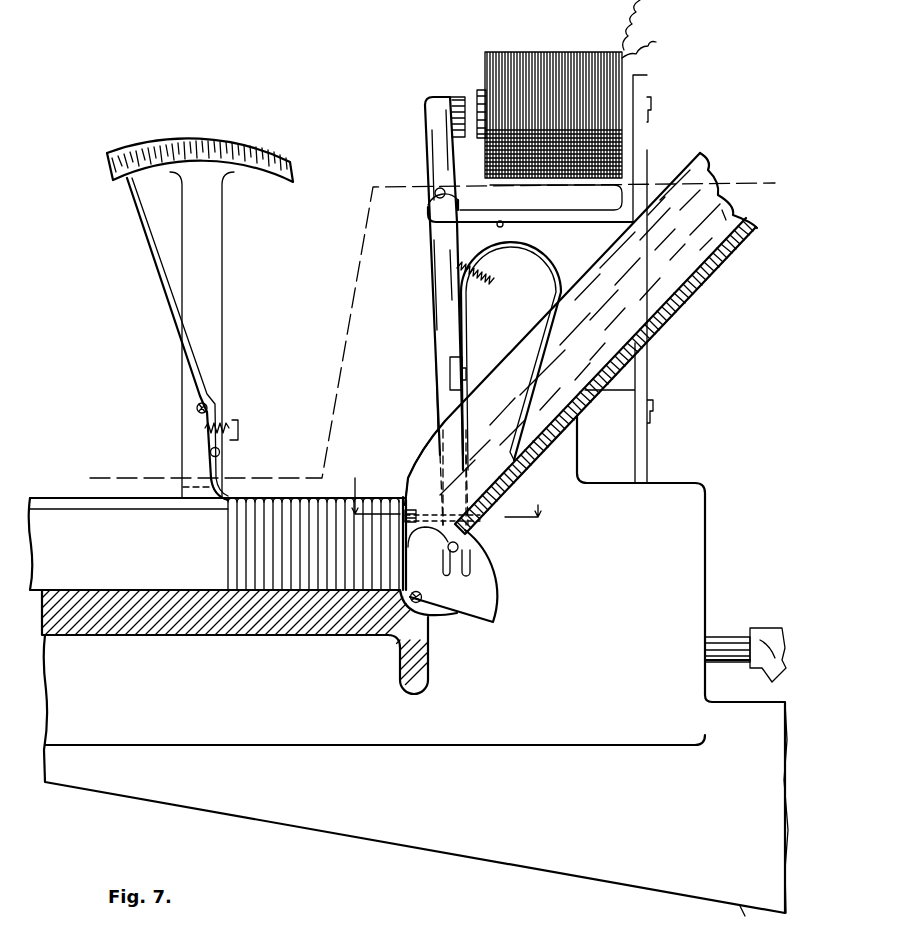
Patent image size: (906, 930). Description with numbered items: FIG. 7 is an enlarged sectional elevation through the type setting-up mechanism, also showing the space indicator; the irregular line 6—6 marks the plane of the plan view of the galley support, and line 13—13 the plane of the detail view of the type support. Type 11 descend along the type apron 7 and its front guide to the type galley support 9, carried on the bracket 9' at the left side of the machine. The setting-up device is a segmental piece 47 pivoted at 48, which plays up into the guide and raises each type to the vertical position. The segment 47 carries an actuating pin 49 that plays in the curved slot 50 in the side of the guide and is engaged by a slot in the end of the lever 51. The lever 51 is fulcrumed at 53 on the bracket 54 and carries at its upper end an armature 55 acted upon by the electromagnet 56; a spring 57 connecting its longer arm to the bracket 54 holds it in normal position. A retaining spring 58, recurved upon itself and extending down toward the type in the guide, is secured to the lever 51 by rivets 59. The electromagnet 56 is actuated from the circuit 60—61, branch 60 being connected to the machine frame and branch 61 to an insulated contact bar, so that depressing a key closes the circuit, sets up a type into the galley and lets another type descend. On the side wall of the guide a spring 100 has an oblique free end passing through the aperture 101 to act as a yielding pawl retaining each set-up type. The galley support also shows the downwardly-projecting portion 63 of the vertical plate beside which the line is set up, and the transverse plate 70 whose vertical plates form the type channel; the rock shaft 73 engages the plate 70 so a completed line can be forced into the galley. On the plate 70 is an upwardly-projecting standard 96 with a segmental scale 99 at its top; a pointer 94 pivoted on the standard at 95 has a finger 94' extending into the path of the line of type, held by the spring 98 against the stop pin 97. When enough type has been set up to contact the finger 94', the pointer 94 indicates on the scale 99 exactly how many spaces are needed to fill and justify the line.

The type apron 7 is at (710, 283).
The type galley support 9 is at (399, 664).
The bracket 9' is at (731, 917).
The type 11 is at (320, 568).
The section line 13— 13 is at (447, 489).
The irregular section line 6— 6 is at (93, 472).
The segmental piece 47 is at (492, 596).
The pivot 48 is at (425, 605).
The actuating pin 49 is at (460, 548).
The curved slot 50 is at (427, 532).
The lever 51 is at (443, 297).
The fulcrum 53 is at (434, 195).
The bracket 54 is at (606, 218).
The armature 55 is at (460, 97).
The electromagnet 56 is at (545, 62).
The spring 57 is at (490, 244).
The retaining spring 58 is at (559, 284).
The rivets 59 is at (464, 372).
The circuit branch 60 is at (633, 22).
The circuit branch 61 is at (649, 45).
The downwardly-projecting portion 63 is at (42, 565).
The transverse plate 70 is at (46, 497).
The rock shaft 73 is at (727, 636).
The pointer 94 is at (174, 339).
The finger 94' is at (196, 507).
The pivot 95 is at (197, 408).
The standard 96 is at (213, 327).
The stop pin 97 is at (221, 452).
The spring 98 is at (228, 424).
The segmental scale 99 is at (247, 160).
The spring 100 is at (406, 511).
The aperture 101 is at (410, 478).